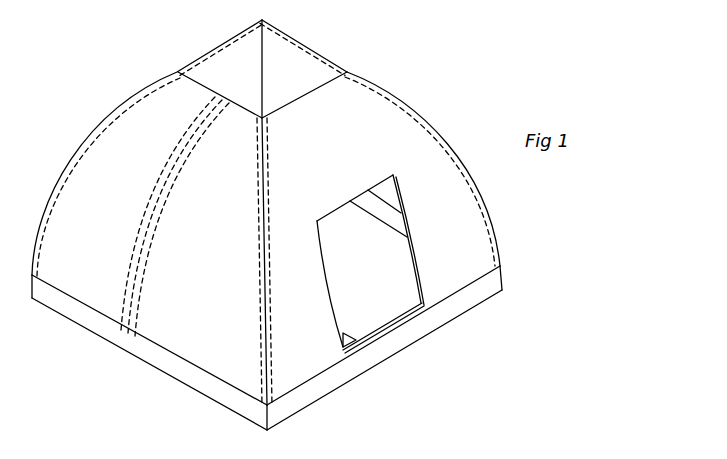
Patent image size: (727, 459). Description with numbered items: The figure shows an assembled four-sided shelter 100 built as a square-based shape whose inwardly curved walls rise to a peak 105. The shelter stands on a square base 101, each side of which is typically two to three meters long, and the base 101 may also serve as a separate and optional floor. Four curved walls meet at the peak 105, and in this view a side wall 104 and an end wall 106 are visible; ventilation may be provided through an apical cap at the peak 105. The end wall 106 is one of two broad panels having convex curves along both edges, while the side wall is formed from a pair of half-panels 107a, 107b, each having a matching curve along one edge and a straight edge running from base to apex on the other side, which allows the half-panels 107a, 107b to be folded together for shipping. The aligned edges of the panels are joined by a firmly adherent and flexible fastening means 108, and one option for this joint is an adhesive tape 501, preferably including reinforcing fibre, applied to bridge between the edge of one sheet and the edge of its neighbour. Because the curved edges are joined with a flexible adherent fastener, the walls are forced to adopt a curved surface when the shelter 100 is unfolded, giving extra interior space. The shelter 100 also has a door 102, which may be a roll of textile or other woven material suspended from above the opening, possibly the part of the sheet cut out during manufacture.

The four-sided shelter 100 is at (137, 32).
The square base 101 is at (149, 364).
The door 102 is at (400, 298).
The side wall 104 is at (131, 366).
The peak 105 is at (275, 66).
The end wall 106 is at (293, 313).
The half-panel 107a is at (85, 182).
The half-panel 107b is at (220, 315).
The fastening means 108 is at (441, 133).
The adhesive tape 501 is at (262, 374).